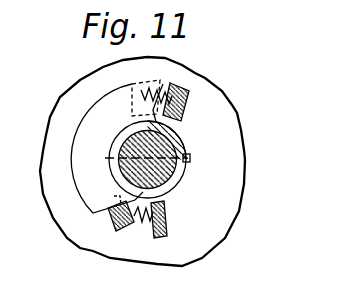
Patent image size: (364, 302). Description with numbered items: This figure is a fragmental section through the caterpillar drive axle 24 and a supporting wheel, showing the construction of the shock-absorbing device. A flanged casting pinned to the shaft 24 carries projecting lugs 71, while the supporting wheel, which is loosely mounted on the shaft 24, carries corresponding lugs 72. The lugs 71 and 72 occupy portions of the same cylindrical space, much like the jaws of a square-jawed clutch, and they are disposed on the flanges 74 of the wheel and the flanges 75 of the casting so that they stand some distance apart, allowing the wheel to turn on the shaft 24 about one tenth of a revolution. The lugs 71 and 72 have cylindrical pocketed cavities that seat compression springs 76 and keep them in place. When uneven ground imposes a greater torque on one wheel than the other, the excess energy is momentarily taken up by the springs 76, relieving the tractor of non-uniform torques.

The caterpillar drive axle 24 is at (166, 185).
The lug 71 is at (190, 99).
The lug 72 is at (131, 97).
The flange 74 is at (248, 151).
The flange 75 is at (93, 198).
The compression spring 76 is at (167, 89).